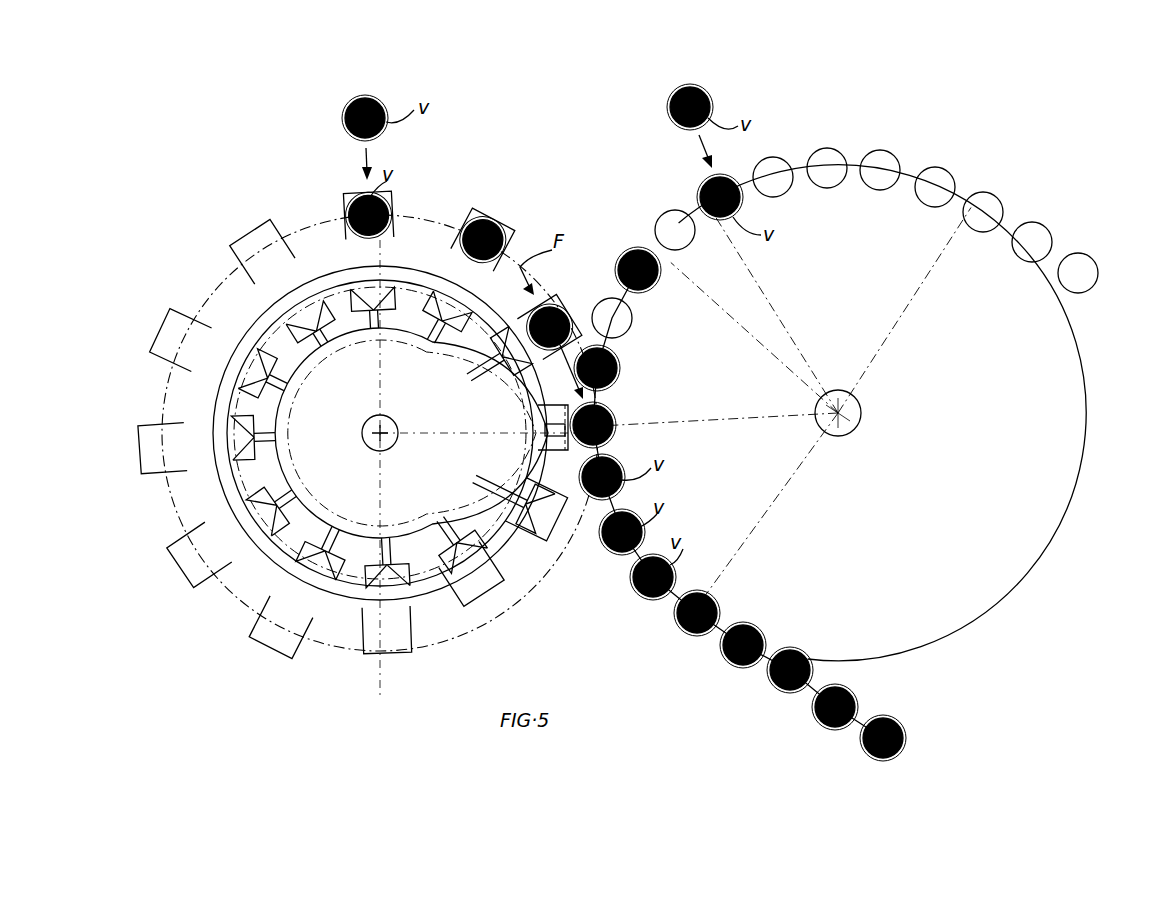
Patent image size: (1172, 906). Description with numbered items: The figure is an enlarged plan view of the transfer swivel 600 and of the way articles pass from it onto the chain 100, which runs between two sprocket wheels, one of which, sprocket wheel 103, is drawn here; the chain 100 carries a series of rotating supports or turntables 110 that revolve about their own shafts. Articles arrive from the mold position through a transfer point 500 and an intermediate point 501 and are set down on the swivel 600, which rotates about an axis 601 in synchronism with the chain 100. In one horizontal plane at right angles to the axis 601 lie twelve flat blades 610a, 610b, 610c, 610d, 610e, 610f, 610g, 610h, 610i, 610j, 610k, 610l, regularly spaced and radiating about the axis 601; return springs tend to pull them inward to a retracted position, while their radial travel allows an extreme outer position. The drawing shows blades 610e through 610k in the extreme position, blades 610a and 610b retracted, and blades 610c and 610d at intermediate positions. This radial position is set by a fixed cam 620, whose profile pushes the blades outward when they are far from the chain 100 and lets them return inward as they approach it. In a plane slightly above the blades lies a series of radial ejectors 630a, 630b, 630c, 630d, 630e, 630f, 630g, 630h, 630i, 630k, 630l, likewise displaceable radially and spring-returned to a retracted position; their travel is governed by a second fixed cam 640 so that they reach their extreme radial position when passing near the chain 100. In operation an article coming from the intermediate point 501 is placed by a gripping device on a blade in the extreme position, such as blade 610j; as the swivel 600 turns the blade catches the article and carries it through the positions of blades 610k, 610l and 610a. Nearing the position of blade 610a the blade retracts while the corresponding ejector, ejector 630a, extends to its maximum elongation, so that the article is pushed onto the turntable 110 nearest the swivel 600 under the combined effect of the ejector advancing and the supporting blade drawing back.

The chain 100 is at (1112, 325).
The sprocket wheel 103 is at (990, 608).
The turntables 110 is at (948, 180).
The transfer point 500 is at (712, 105).
The intermediate point 501 is at (378, 100).
The transfer swivel 600 is at (347, 706).
The axis 601 is at (397, 428).
The blade 610a is at (558, 449).
The blade 610b is at (545, 520).
The blade 610c is at (486, 595).
The blade 610d is at (410, 648).
The blade 610e is at (275, 645).
The blade 610f is at (185, 567).
The blade 610g is at (145, 455).
The blade 610h is at (160, 335).
The blade 610i is at (246, 252).
The blade 610j is at (390, 198).
The blade 610k is at (494, 228).
The blade 610l is at (552, 300).
The fixed cam 620 is at (203, 402).
The radial ejector 630a is at (550, 406).
The radial ejector 630b is at (520, 543).
The radial ejector 630c is at (460, 570).
The radial ejector 630d is at (388, 575).
The radial ejector 630e is at (313, 560).
The radial ejector 630f is at (258, 515).
The radial ejector 630g is at (235, 440).
The radial ejector 630h is at (260, 375).
The radial ejector 630i is at (310, 318).
The radial ejector 630k is at (455, 308).
The radial ejector 630l is at (503, 352).
The fixed cam 640 is at (278, 422).